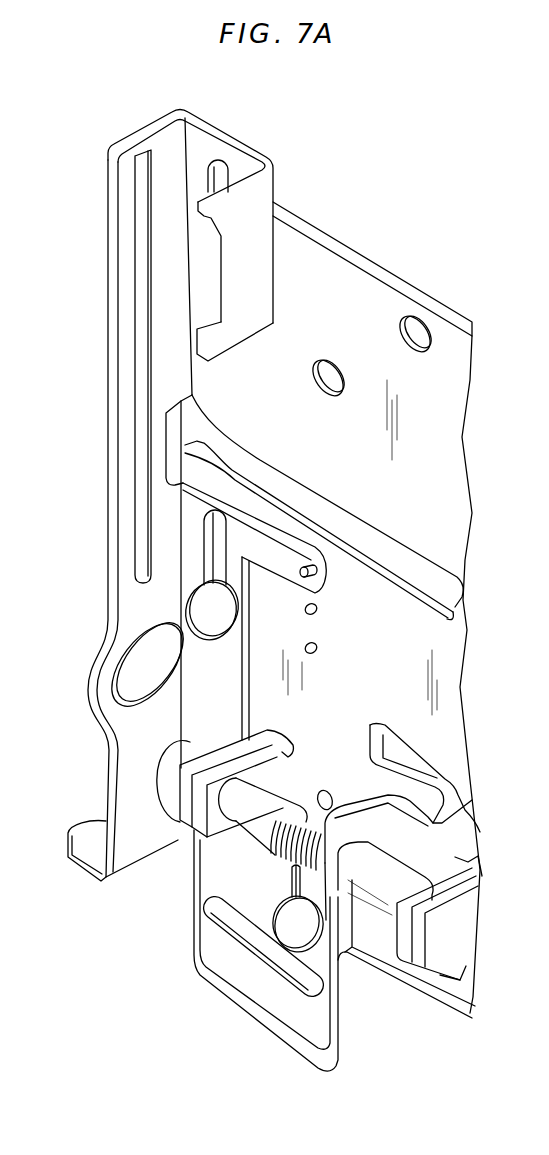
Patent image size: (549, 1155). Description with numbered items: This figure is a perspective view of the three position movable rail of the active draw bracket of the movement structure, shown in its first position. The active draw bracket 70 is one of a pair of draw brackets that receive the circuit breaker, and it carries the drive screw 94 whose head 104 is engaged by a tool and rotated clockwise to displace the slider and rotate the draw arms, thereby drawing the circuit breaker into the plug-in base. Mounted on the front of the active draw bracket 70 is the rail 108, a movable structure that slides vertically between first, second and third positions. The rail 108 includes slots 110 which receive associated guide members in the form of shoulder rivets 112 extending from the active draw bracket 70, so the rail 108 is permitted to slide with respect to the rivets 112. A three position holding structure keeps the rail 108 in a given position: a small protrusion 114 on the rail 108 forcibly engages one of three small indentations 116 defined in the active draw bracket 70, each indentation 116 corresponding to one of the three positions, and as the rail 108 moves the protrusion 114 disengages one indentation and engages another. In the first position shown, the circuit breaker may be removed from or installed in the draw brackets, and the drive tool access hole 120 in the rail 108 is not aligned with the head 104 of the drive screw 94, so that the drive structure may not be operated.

The active draw bracket 70 is at (360, 290).
The drive screw 94 is at (253, 805).
The head 104 is at (168, 782).
The rail 108 is at (108, 598).
The slots 110 is at (223, 538).
The shoulder rivets 112 is at (207, 622).
The protrusion 114 is at (334, 580).
The indentations 116 is at (317, 611).
The drive tool access hole 120 is at (112, 694).